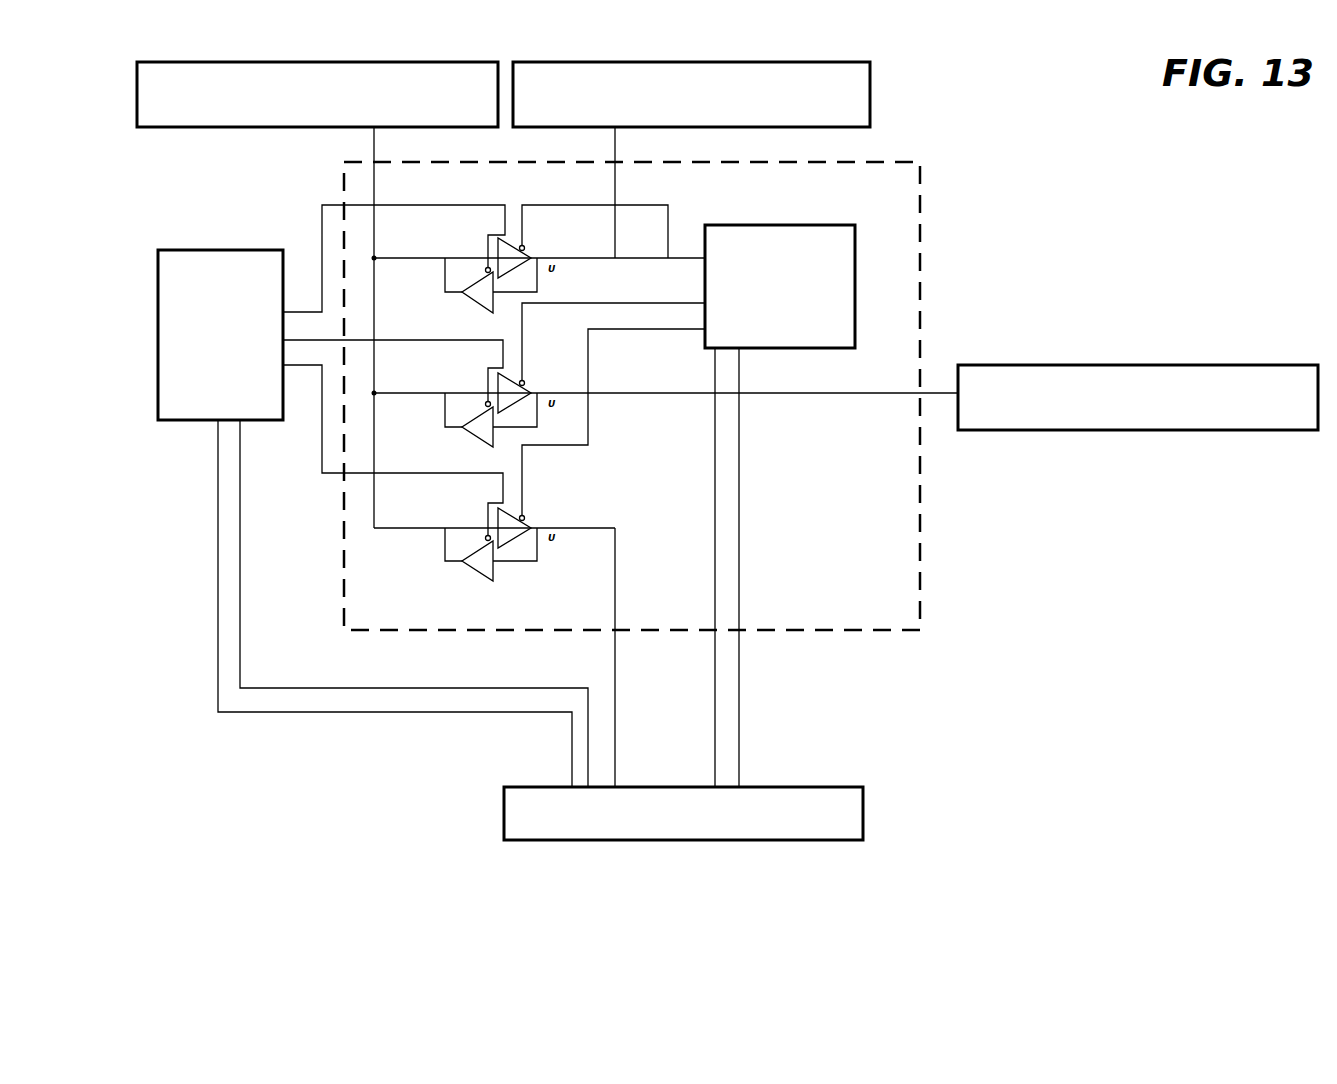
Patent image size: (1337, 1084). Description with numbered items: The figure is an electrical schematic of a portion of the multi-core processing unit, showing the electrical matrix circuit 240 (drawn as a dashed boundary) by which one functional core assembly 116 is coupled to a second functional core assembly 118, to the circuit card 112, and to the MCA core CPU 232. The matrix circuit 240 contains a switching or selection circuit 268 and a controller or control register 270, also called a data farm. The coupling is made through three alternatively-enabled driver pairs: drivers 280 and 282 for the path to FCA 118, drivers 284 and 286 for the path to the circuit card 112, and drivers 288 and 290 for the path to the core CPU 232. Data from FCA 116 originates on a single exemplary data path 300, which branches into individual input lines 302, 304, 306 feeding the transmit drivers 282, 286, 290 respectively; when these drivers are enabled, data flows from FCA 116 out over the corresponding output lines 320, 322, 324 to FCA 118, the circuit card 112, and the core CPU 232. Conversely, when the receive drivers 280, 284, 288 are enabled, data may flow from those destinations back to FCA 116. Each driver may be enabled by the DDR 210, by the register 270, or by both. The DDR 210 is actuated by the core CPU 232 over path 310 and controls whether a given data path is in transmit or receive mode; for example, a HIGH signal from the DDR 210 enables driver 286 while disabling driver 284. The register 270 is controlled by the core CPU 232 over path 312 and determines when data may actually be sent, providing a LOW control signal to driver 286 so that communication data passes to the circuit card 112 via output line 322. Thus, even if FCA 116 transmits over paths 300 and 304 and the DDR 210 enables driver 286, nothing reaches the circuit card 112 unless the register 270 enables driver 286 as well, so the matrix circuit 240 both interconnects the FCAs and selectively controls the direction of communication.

The circuit card 112 is at (1138, 397).
The functional core assembly 116 is at (317, 94).
The functional core assembly 118 is at (691, 94).
The DDR 210 is at (220, 335).
The core CPU 232 is at (683, 813).
The electrical matrix circuit 240 is at (911, 160).
The selection circuit 268 is at (599, 462).
The control register 270 is at (780, 286).
The driver 280 is at (478, 304).
The driver 282 is at (525, 256).
The driver 284 is at (478, 439).
The driver 286 is at (525, 391).
The driver 288 is at (478, 574).
The driver 290 is at (527, 525).
The data path 300 is at (377, 191).
The input line 302 is at (388, 258).
The input line 304 is at (390, 393).
The input line 306 is at (390, 528).
The path 310 is at (240, 528).
The path 312 is at (715, 517).
The output line 320 is at (617, 196).
The output line 322 is at (632, 393).
The output line 324 is at (617, 566).